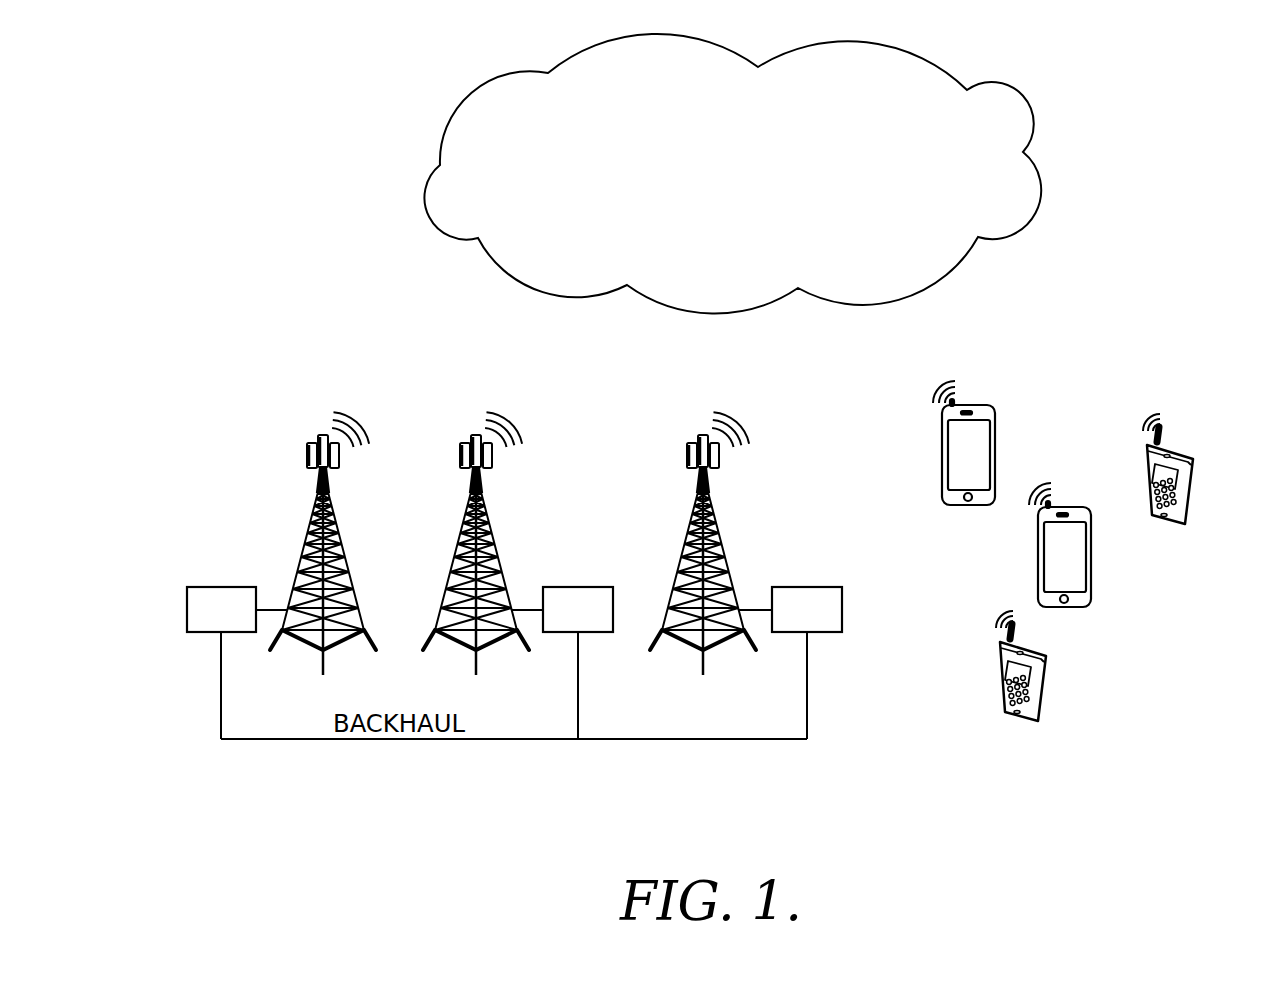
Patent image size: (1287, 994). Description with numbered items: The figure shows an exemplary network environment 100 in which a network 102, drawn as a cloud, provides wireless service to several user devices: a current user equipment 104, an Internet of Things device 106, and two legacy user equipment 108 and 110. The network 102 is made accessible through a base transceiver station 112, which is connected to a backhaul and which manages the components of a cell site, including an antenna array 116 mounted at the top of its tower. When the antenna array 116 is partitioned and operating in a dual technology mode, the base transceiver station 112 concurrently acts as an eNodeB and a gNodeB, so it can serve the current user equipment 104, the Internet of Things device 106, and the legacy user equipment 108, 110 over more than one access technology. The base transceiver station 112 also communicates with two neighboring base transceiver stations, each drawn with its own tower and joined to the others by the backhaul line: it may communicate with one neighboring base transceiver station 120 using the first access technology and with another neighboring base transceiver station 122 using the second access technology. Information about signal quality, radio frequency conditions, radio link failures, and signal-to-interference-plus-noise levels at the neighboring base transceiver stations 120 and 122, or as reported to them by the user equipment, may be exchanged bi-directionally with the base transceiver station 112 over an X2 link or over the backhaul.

The network environment 100 is at (113, 87).
The network 102 is at (754, 188).
The current user equipment 104 is at (996, 453).
The Internet of Things device 106 is at (1092, 551).
The legacy user equipment 108 is at (1043, 683).
The legacy user equipment 110 is at (1190, 486).
The base transceiver station 112 is at (807, 587).
The antenna array 116 is at (719, 455).
The neighboring base transceiver station 120 is at (578, 587).
The neighboring base transceiver station 122 is at (221, 587).